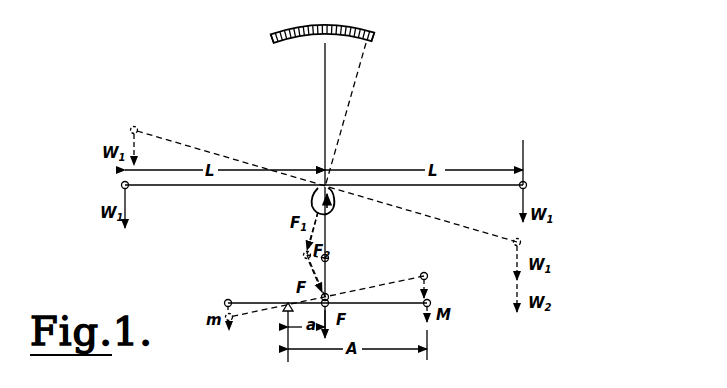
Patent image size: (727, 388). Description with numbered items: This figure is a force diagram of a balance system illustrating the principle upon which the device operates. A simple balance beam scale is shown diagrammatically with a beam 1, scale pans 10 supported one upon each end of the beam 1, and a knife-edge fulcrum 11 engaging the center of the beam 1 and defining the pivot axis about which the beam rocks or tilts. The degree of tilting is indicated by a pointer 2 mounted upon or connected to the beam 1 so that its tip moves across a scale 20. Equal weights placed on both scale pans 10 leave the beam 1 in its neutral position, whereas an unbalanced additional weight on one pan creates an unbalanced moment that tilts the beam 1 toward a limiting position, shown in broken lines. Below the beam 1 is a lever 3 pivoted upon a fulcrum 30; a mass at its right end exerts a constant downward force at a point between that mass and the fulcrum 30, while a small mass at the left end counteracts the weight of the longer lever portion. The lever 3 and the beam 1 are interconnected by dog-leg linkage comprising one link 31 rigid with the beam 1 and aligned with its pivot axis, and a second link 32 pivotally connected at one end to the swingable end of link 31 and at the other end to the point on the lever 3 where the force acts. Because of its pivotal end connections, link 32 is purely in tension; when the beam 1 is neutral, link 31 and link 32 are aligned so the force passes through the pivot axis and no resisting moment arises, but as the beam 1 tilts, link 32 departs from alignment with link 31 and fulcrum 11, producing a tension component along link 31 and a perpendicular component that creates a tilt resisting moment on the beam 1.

The scale 20 is at (338, 26).
The pointer 2 is at (323, 93).
The beam 1 is at (148, 188).
The scale pans 10 is at (122, 186).
The fulcrum 11 is at (334, 204).
The link 31 is at (330, 241).
The second link 32 is at (330, 283).
The lever 3 is at (362, 305).
The fulcrum 30 is at (285, 313).